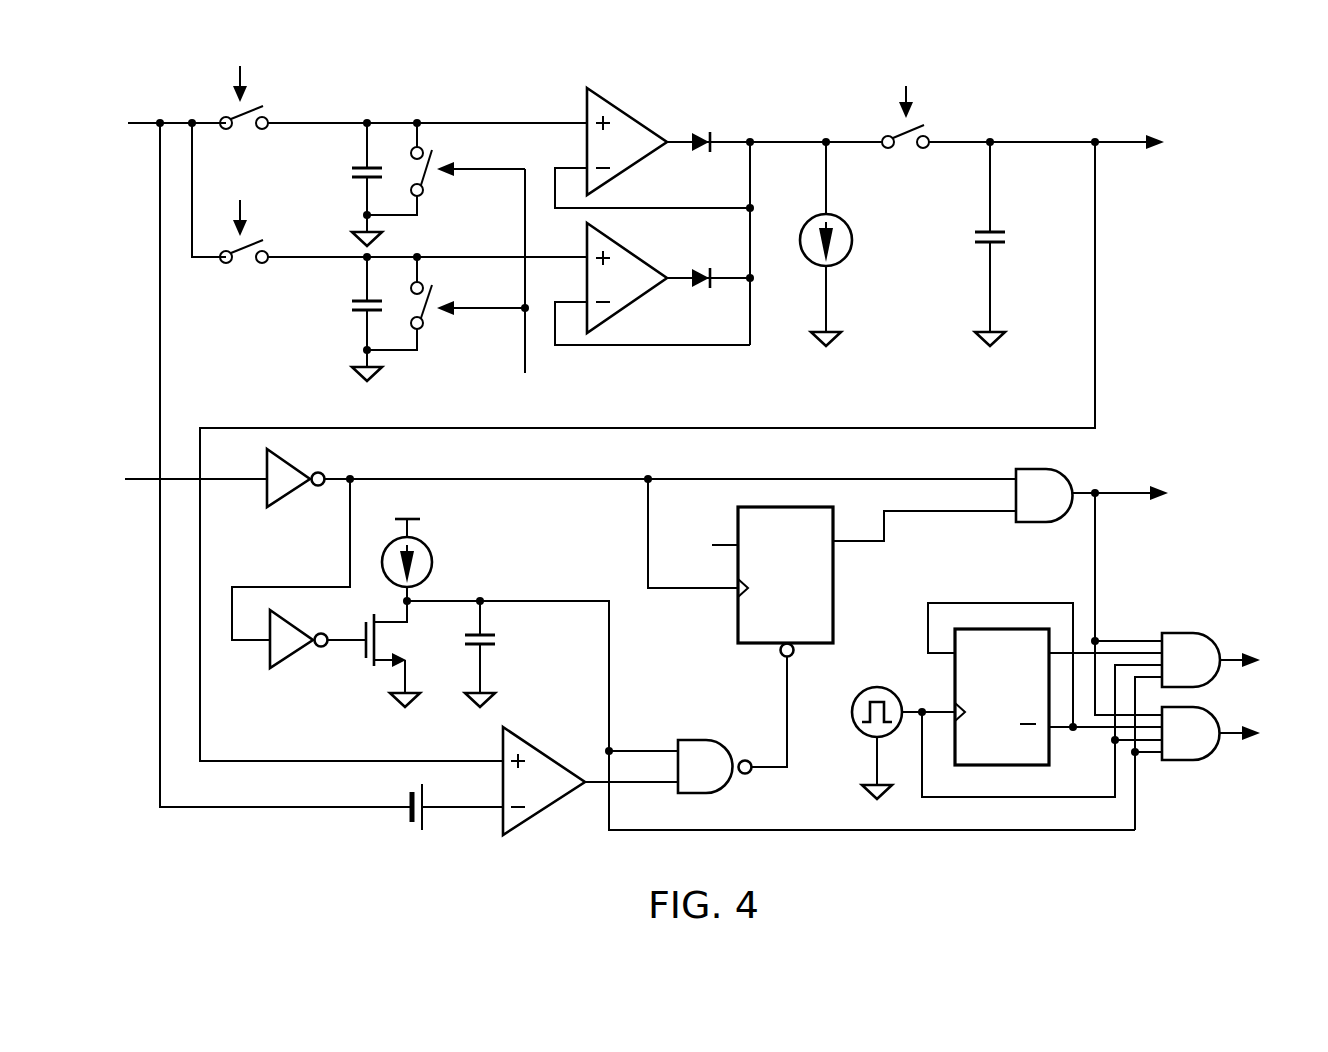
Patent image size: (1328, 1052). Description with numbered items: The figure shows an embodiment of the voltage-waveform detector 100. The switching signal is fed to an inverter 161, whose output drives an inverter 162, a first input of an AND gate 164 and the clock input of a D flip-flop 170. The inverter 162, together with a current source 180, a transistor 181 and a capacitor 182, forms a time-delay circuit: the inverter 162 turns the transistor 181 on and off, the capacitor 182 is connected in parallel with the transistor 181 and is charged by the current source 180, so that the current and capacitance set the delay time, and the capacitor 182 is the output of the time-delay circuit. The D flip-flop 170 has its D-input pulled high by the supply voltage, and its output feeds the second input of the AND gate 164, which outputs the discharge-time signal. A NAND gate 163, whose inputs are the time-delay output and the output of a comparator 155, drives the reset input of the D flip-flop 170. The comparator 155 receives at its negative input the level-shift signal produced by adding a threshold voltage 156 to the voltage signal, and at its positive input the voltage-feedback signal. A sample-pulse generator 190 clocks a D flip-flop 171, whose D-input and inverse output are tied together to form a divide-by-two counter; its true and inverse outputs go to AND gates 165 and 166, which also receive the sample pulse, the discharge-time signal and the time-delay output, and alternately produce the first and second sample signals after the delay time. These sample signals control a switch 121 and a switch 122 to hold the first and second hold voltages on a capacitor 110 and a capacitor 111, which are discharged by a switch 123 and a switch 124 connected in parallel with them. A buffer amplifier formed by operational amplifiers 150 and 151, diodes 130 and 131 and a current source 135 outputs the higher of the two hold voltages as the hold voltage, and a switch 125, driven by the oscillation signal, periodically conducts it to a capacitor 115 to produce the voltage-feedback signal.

The voltage-waveform detector 100 is at (1262, 85).
The capacitor 110 is at (352, 172).
The capacitor 111 is at (352, 306).
The capacitor 115 is at (1008, 242).
The switch 121 is at (270, 106).
The switch 122 is at (237, 284).
The switch 123 is at (432, 188).
The switch 124 is at (432, 322).
The switch 125 is at (902, 154).
The diode 130 is at (698, 126).
The diode 131 is at (702, 292).
The current source 135 is at (852, 250).
The operational amplifier 150 is at (618, 108).
The operational amplifier 151 is at (624, 318).
The comparator 155 is at (538, 750).
The threshold voltage 156 is at (412, 830).
The inverter 161 is at (298, 508).
The inverter 162 is at (282, 668).
The NAND gate 163 is at (700, 738).
The AND gate 164 is at (1036, 524).
The AND gate 165 is at (1190, 630).
The AND gate 166 is at (1186, 762).
The D flip-flop 170 is at (836, 574).
The D flip-flop 171 is at (1006, 626).
The current source 180 is at (434, 564).
The transistor 181 is at (370, 668).
The capacitor 182 is at (498, 636).
The sample-pulse generator 190 is at (876, 686).